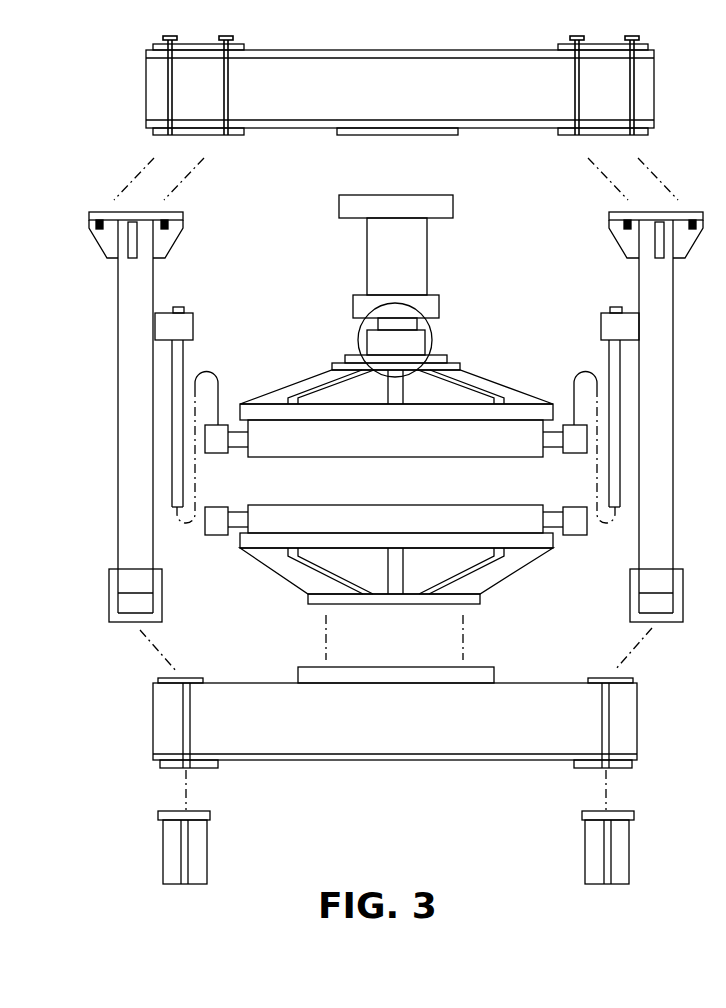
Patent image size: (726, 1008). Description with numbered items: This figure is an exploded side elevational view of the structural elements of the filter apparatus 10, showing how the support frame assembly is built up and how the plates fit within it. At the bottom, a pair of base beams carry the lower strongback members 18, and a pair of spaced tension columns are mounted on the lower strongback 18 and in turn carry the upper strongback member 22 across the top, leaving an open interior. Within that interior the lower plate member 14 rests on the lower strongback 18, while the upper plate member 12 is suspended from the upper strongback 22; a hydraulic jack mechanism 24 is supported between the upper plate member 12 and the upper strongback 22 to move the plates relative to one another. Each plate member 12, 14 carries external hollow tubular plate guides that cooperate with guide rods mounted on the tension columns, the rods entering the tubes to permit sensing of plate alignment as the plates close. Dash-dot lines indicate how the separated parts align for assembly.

The upper strongback member 22 is at (414, 93).
The hydraulic jack mechanism 24 is at (413, 273).
The filter apparatus 10 is at (432, 337).
The upper plate member 12 is at (514, 375).
The lower plate member 14 is at (515, 578).
The lower strongback members 18 is at (402, 729).